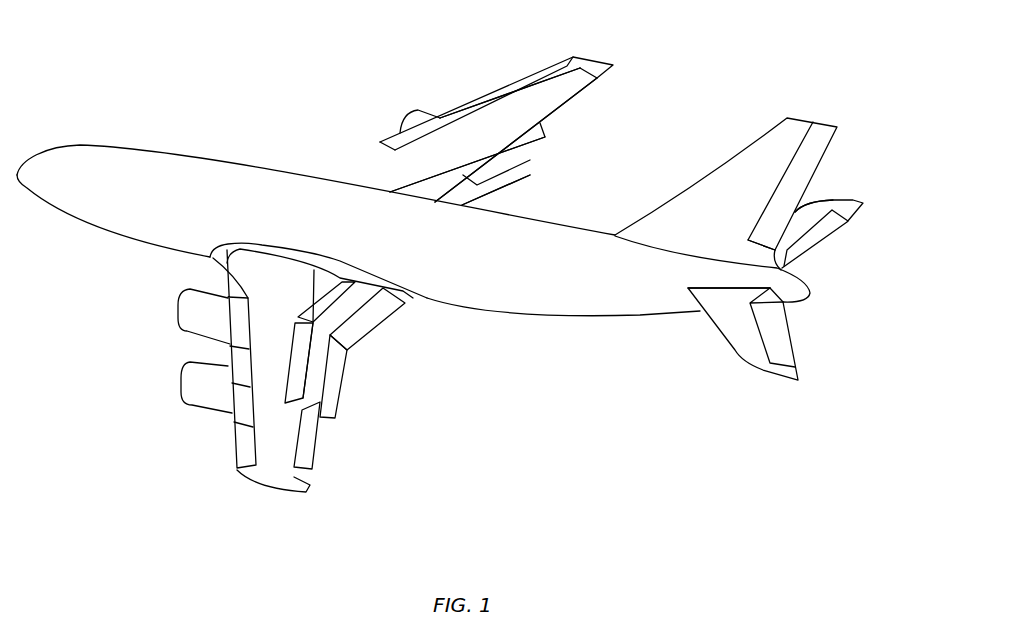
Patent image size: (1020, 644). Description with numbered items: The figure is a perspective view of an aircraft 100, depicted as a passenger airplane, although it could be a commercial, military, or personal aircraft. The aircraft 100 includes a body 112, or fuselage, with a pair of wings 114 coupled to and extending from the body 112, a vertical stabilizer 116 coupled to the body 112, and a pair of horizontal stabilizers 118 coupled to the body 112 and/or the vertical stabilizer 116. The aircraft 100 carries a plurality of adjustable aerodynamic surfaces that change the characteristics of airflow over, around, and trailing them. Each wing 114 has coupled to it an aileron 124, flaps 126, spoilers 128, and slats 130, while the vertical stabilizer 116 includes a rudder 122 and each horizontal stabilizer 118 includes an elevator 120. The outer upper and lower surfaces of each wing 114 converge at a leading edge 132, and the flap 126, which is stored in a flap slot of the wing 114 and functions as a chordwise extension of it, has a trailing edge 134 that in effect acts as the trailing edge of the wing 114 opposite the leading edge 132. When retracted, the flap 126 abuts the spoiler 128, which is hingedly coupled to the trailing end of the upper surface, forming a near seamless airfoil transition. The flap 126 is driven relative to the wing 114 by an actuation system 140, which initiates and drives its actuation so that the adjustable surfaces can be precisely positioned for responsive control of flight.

The aircraft 100 is at (684, 68).
The body 112 is at (107, 217).
The wing 114 is at (465, 127).
The vertical stabilizer 116 is at (750, 163).
The horizontal stabilizer 118 is at (833, 200).
The elevator 120 is at (785, 330).
The rudder 122 is at (833, 128).
The aileron 124 is at (560, 95).
The flap 126 is at (462, 195).
The spoiler 128 is at (413, 185).
The slat 130 is at (523, 80).
The leading edge 132 is at (183, 360).
The trailing edge 134 is at (343, 385).
The actuation system 140 is at (782, 348).